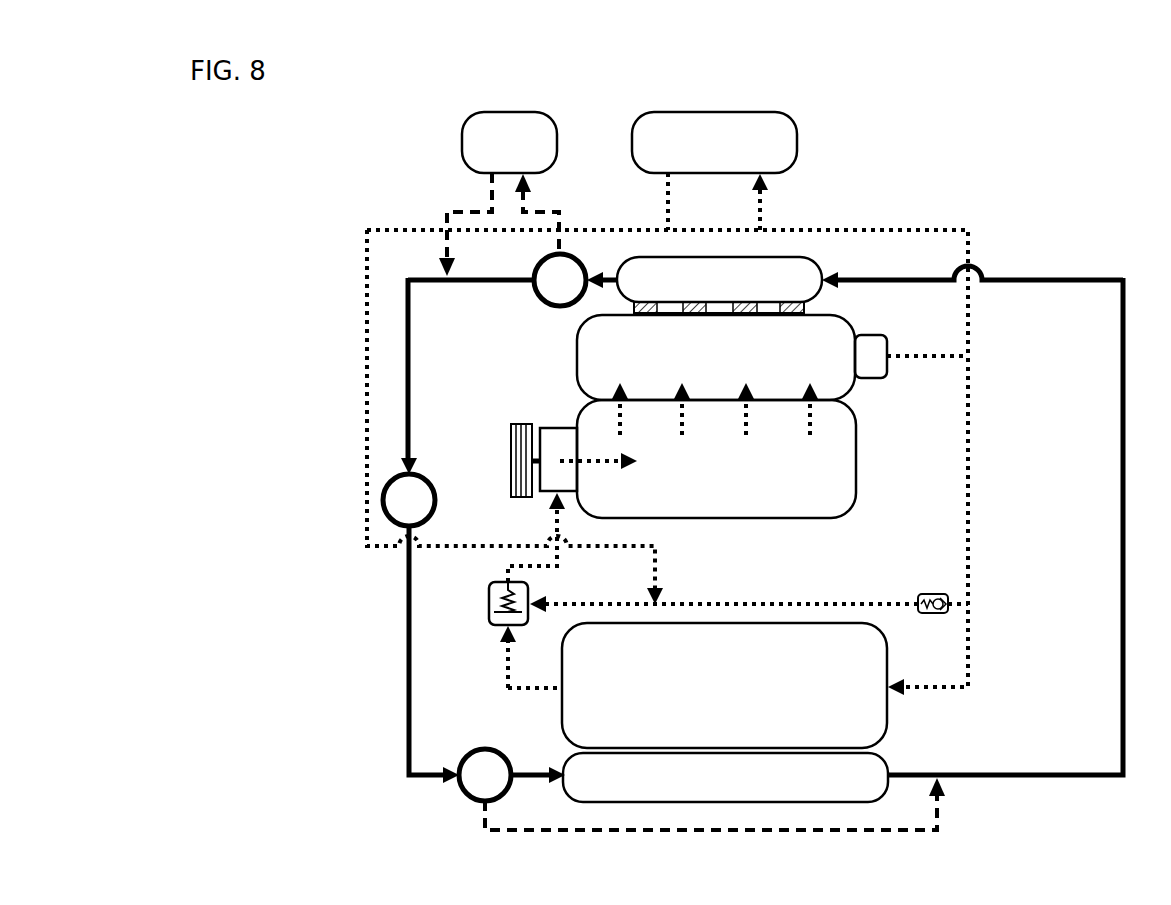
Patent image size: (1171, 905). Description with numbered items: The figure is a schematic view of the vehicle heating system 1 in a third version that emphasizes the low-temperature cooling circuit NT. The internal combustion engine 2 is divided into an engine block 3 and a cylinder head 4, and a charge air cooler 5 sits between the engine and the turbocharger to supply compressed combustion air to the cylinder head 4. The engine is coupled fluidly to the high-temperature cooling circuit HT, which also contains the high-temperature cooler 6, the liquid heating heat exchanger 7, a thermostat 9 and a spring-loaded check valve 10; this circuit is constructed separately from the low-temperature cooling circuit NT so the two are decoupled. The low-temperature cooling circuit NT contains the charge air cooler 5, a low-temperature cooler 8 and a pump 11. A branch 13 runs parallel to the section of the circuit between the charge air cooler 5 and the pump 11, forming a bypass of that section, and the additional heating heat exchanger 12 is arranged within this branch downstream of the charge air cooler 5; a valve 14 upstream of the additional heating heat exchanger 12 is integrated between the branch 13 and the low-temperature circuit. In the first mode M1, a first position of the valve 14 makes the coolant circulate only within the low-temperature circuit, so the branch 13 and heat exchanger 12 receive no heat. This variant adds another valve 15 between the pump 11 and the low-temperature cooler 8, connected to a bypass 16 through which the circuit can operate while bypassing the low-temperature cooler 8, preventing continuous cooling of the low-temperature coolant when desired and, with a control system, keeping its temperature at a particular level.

The vehicle heating system 1 is at (1075, 200).
The internal combustion engine 2 is at (540, 403).
The engine block 3 is at (835, 497).
The cylinder head 4 is at (839, 379).
The charge air cooler 5 is at (740, 272).
The high-temperature cooler 6 is at (872, 712).
The heating heat exchanger 7 is at (782, 150).
The low-temperature cooler 8 is at (578, 770).
The thermostat 9 is at (480, 636).
The spring-loaded check valve 10 is at (905, 590).
The pump 11 is at (418, 487).
The additional heating heat exchanger 12 is at (470, 152).
The branch 13 is at (556, 188).
The valve 14 is at (566, 291).
The valve 15 is at (478, 778).
The bypass 16 is at (950, 806).
The first mode M1 is at (326, 283).
The high-temperature cooling circuit HT is at (972, 443).
The low-temperature cooling circuit NT is at (1120, 675).